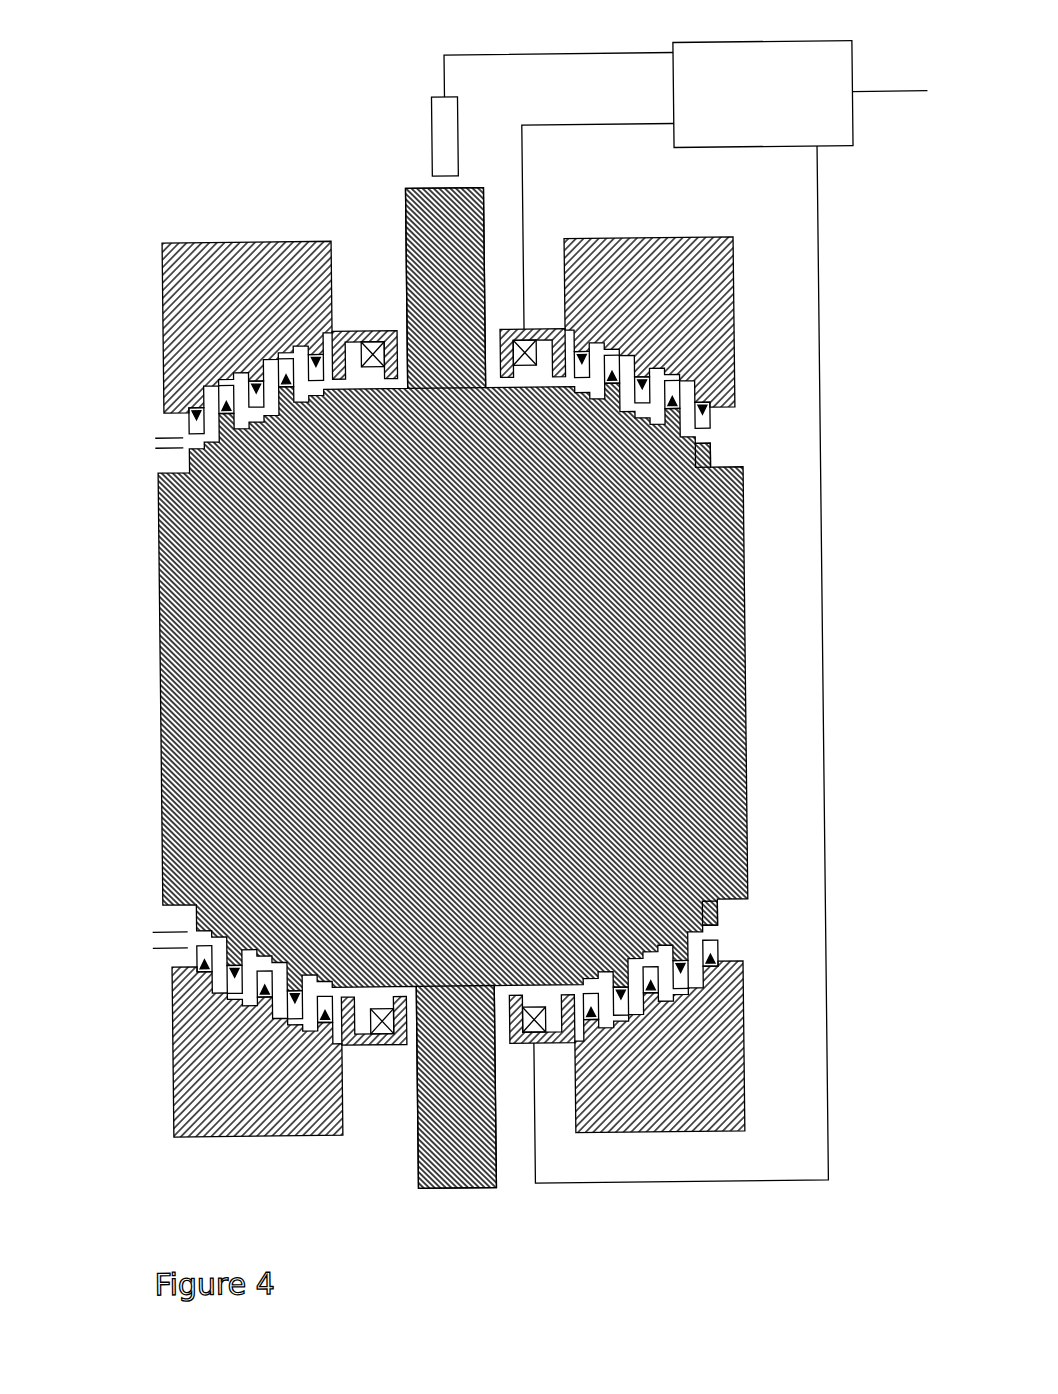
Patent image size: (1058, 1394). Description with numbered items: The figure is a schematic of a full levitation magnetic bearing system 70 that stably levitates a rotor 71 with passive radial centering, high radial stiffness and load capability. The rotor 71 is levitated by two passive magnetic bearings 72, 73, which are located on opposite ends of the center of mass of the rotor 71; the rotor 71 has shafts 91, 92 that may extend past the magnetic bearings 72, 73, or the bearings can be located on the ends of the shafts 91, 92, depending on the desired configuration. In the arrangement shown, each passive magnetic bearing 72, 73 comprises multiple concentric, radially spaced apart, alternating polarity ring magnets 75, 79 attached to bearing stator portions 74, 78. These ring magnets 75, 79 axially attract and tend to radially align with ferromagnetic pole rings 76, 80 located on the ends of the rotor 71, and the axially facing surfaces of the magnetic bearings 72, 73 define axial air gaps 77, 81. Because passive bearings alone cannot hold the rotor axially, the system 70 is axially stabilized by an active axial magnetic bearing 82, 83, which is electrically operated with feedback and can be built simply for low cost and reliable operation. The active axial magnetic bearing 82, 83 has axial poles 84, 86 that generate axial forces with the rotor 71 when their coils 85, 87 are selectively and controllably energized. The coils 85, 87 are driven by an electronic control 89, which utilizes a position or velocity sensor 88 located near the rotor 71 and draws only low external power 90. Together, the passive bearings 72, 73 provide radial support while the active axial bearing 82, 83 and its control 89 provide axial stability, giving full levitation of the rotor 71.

The full levitation magnetic bearing system 70 is at (142, 100).
The rotor 71 is at (160, 632).
The passive magnetic bearing 72 is at (165, 406).
The passive magnetic bearing 73 is at (160, 968).
The bearing stator portion 74 is at (167, 276).
The ring magnets 75 is at (715, 423).
The ferromagnetic pole ring 76 is at (715, 446).
The axial air gap 77 is at (142, 446).
The bearing stator portion 78 is at (169, 1078).
The ring magnets 79 is at (712, 953).
The ferromagnetic pole ring 80 is at (708, 920).
The axial air gap 81 is at (135, 941).
The active axial magnetic bearing 82 is at (544, 318).
The active axial magnetic bearing 83 is at (512, 1058).
The axial pole 84 is at (350, 378).
The coil 85 is at (370, 340).
The axial pole 86 is at (405, 995).
The coil 87 is at (370, 1023).
The position or velocity sensor 88 is at (438, 131).
The electronic control 89 is at (728, 10).
The low external power 90 is at (934, 97).
The shaft 91 is at (411, 212).
The shaft 92 is at (414, 1172).